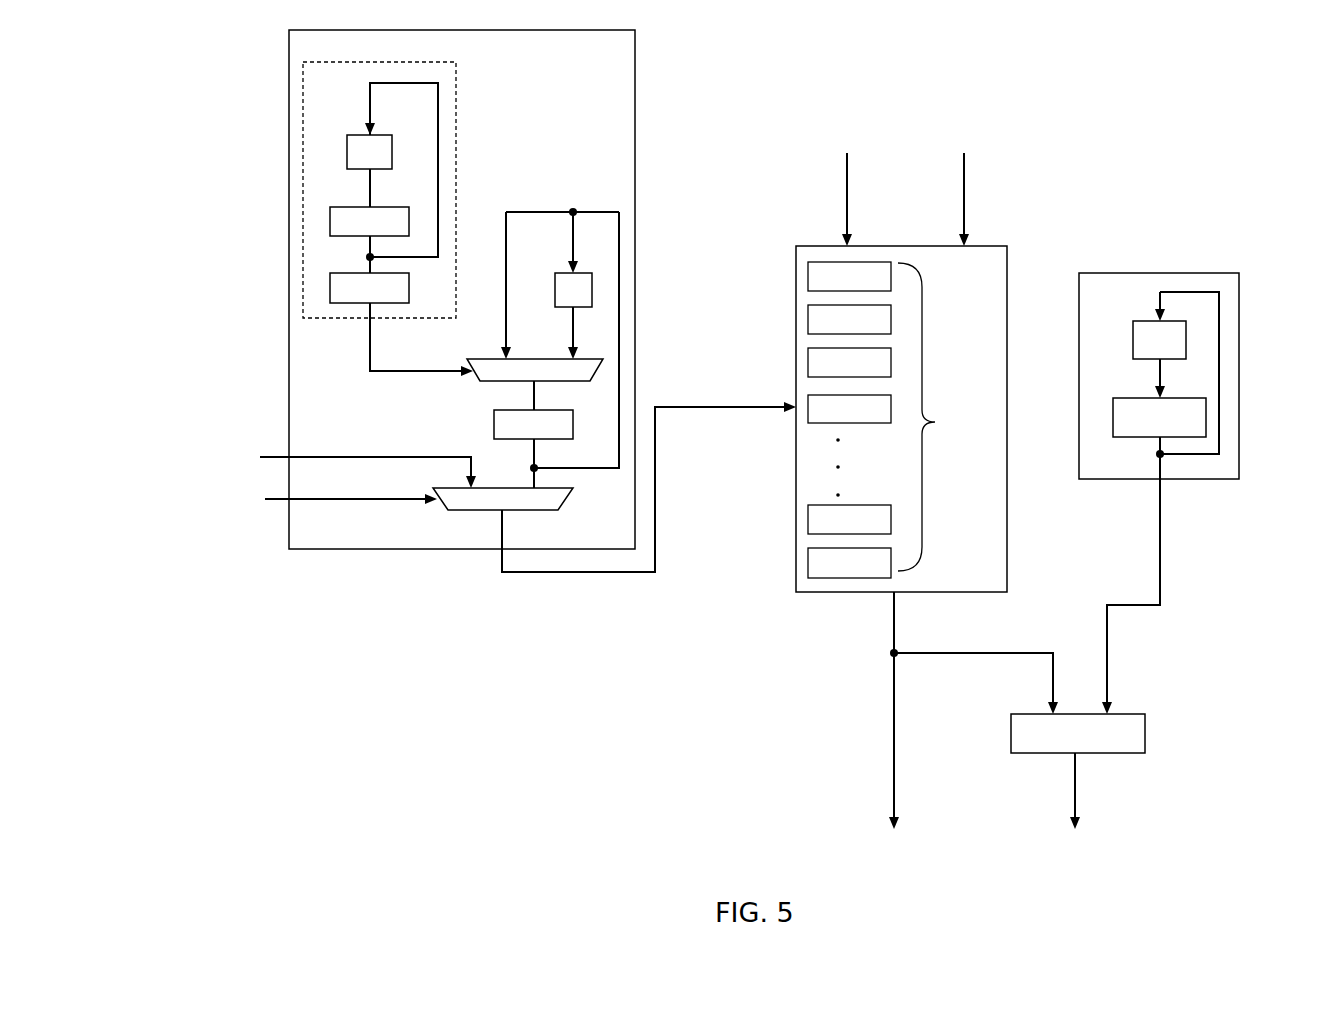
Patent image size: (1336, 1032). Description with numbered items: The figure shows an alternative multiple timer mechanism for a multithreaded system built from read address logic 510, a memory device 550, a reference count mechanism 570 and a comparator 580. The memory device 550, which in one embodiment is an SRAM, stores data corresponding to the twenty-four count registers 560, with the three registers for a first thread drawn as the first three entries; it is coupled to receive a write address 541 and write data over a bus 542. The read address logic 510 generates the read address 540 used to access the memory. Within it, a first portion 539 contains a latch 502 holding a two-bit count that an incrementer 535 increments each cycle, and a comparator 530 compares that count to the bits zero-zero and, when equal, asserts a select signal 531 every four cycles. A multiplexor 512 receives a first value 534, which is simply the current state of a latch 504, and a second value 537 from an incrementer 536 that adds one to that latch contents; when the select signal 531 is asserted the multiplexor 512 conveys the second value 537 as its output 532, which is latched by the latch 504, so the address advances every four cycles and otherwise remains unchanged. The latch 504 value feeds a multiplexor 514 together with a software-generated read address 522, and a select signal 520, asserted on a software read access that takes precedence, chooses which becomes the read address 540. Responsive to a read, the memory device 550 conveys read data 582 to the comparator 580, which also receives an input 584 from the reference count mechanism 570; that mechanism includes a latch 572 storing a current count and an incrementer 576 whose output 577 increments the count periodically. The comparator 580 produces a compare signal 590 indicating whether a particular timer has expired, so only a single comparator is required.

The read address logic 510 is at (462, 289).
The first portion 539 is at (455, 117).
The incrementer 535 is at (358, 137).
The latch 502 is at (369, 221).
The comparator 530 is at (332, 273).
The select signal 531 is at (368, 352).
The incrementer 536 is at (590, 279).
The second value 537 is at (575, 323).
The multiplexor 512 is at (582, 370).
The output 532 is at (531, 400).
The latch 504 is at (533, 424).
The first value 534 is at (531, 455).
The read address 522 is at (310, 457).
The multiplexor 514 is at (545, 498).
The select signal 520 is at (277, 500).
The read address 540 is at (622, 572).
The write address input 541 is at (846, 190).
The bus 542 is at (966, 187).
The memory device 550 is at (901, 419).
The count registers 560 is at (937, 417).
The reference count mechanism 570 is at (1159, 376).
The incrementer 576 is at (1180, 331).
The incrementer output line 577 is at (1160, 380).
The latch 572 is at (1159, 417).
The input 584 is at (1163, 568).
The read data 582 is at (891, 632).
The comparator 580 is at (1122, 714).
The compare signal 590 is at (1078, 796).